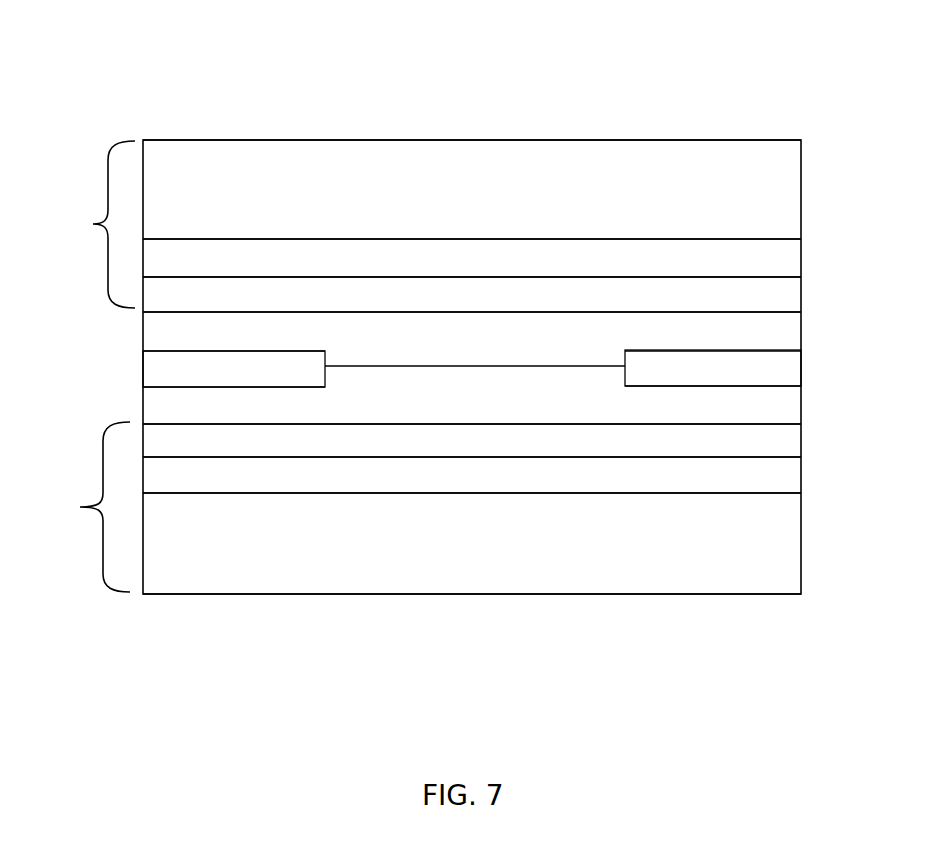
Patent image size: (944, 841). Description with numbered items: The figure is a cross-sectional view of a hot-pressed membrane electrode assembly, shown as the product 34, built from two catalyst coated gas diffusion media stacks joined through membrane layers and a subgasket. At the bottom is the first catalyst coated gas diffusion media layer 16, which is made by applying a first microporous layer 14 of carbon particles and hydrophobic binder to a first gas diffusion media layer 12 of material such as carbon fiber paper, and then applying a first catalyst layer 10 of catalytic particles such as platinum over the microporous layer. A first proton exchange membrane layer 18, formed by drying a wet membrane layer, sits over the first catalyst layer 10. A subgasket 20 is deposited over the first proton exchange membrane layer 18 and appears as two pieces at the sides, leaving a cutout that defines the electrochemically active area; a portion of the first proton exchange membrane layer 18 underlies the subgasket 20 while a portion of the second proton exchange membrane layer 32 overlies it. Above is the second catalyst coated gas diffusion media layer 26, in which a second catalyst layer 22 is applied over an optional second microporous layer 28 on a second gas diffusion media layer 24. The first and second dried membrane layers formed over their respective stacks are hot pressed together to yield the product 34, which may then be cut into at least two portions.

The product 34 is at (815, 66).
The second gas diffusion media layer 24 is at (783, 200).
The second microporous layer 28 is at (785, 263).
The second catalyst layer 22 is at (785, 300).
The second proton exchange membrane layer 32 is at (787, 335).
The subgasket 20 is at (789, 371).
The first proton exchange membrane layer 18 is at (790, 408).
The first catalyst layer 10 is at (787, 444).
The first microporous layer 14 is at (789, 478).
The first gas diffusion media layer 12 is at (786, 547).
The second catalyst coated gas diffusion media layer 26 is at (93, 224).
The first catalyst coated gas diffusion media layer 16 is at (80, 507).